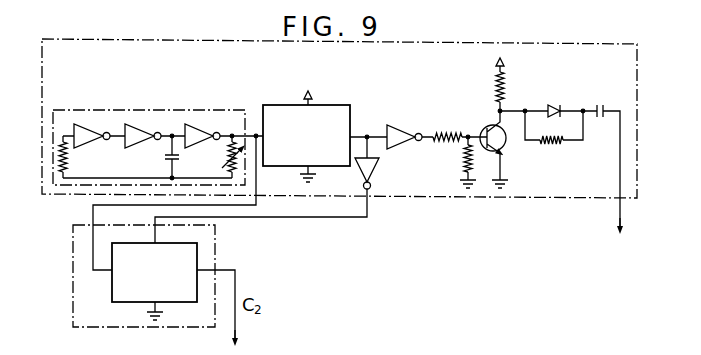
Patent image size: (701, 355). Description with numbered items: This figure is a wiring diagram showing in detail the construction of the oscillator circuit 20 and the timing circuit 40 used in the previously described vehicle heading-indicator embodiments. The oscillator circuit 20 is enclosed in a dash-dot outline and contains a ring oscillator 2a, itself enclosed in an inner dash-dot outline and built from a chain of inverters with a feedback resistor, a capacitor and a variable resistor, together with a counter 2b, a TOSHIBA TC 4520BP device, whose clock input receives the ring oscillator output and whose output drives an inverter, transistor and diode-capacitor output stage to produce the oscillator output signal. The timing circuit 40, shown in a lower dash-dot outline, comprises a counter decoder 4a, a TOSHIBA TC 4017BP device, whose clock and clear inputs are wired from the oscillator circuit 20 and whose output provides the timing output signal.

The oscillator circuit 20 is at (42, 102).
The ring oscillator 2a is at (153, 110).
The counter 2b is at (328, 105).
The timing circuit 40 is at (215, 260).
The counter decoder 4a is at (112, 285).